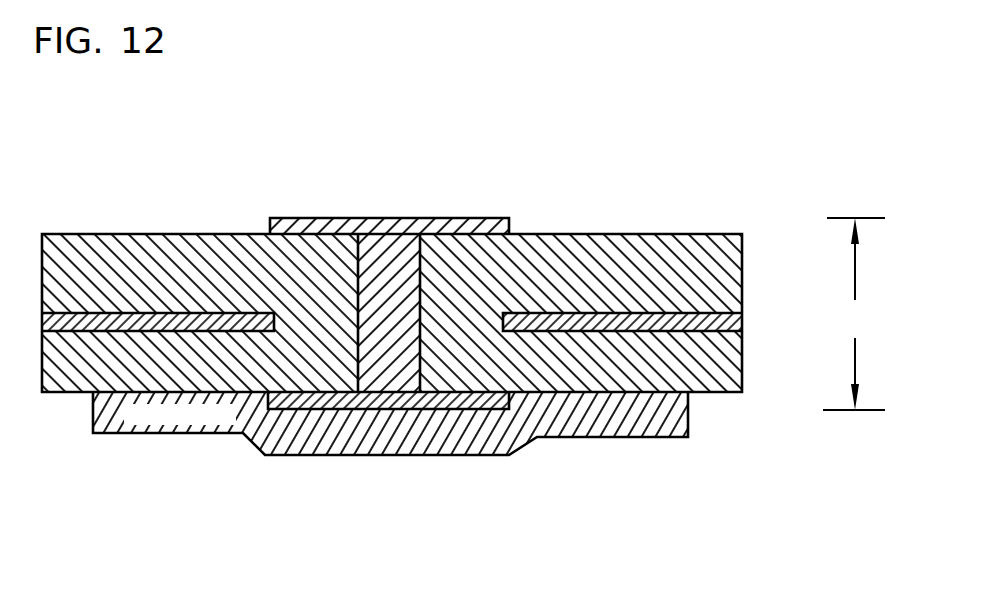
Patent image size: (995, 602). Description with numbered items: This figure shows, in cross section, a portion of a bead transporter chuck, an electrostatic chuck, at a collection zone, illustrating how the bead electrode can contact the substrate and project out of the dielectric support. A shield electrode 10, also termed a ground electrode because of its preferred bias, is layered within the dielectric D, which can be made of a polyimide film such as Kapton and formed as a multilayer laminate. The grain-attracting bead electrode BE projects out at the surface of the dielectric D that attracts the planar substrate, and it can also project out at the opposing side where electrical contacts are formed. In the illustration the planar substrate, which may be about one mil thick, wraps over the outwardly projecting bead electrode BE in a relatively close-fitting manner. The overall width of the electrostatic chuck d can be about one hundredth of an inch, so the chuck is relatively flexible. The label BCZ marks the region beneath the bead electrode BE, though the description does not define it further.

The shield electrode 10 is at (115, 312).
The dielectric D is at (583, 263).
The buried contact zone BCZ is at (418, 390).
The bead electrode BE is at (445, 398).
The width of the electrostatic chuck d is at (854, 314).
The planar substrate is at (390, 423).